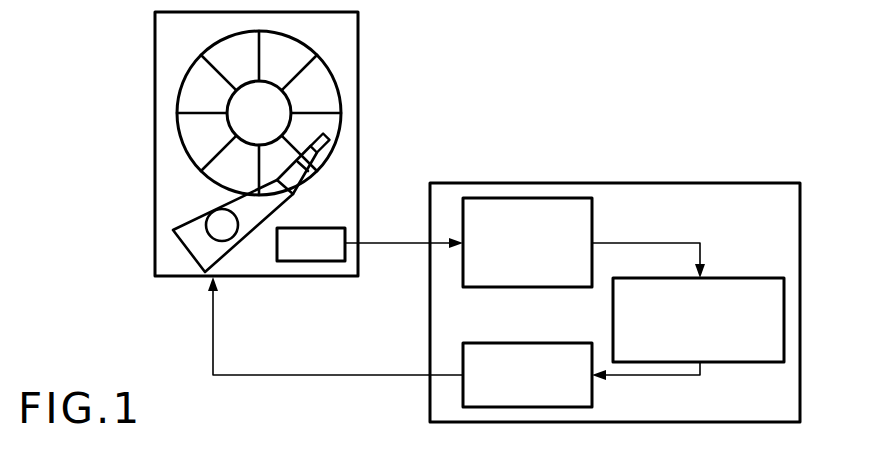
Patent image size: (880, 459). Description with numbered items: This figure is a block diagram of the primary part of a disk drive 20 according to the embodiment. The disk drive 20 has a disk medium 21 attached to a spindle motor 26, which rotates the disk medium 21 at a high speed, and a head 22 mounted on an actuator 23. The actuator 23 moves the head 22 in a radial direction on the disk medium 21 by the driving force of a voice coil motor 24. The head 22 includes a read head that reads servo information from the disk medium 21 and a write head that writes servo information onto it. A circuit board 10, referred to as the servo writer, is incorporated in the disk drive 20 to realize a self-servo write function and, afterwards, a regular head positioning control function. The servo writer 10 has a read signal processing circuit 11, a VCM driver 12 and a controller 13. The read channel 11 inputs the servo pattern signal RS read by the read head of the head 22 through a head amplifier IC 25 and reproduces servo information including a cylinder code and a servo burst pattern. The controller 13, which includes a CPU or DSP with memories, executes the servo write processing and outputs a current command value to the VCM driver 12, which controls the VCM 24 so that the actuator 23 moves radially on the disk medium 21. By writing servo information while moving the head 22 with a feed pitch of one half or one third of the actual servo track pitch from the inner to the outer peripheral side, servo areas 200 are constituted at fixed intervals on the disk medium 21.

The circuit board 10 is at (626, 200).
The read signal processing circuit 11 is at (537, 198).
The VCM driver 12 is at (592, 398).
The controller 13 is at (745, 278).
The disk drive 20 is at (358, 37).
The disk medium 21 is at (190, 158).
The head 22 is at (330, 152).
The actuator 23 is at (283, 194).
The voice coil motor 24 is at (186, 258).
The head amplifier IC 25 is at (313, 261).
The spindle motor 26 is at (270, 105).
The servo areas 200 is at (217, 70).
The servo pattern signal RS is at (396, 245).